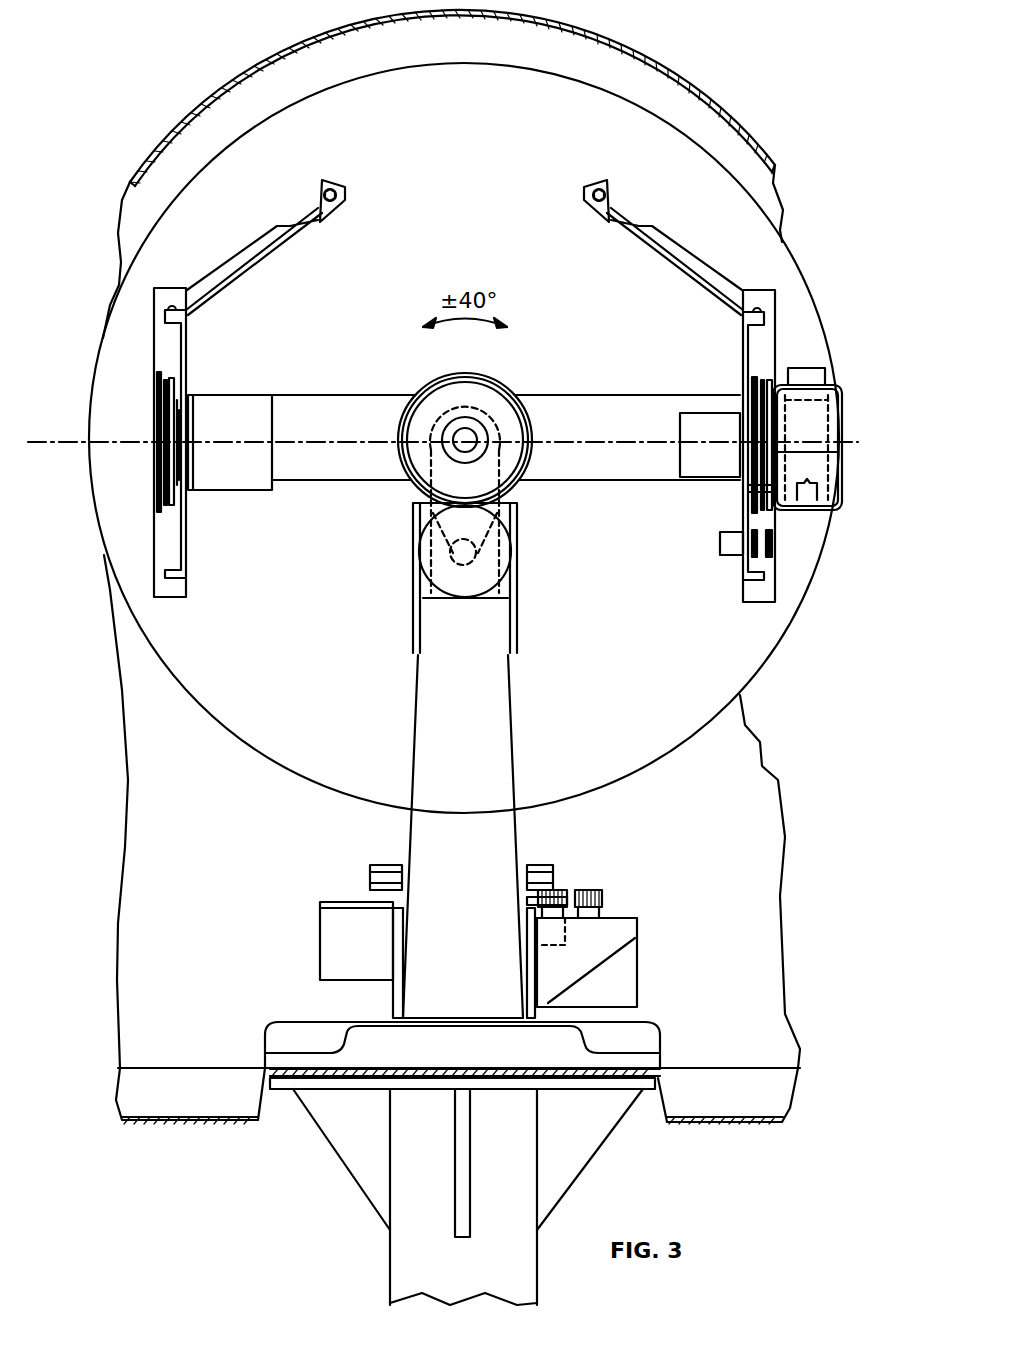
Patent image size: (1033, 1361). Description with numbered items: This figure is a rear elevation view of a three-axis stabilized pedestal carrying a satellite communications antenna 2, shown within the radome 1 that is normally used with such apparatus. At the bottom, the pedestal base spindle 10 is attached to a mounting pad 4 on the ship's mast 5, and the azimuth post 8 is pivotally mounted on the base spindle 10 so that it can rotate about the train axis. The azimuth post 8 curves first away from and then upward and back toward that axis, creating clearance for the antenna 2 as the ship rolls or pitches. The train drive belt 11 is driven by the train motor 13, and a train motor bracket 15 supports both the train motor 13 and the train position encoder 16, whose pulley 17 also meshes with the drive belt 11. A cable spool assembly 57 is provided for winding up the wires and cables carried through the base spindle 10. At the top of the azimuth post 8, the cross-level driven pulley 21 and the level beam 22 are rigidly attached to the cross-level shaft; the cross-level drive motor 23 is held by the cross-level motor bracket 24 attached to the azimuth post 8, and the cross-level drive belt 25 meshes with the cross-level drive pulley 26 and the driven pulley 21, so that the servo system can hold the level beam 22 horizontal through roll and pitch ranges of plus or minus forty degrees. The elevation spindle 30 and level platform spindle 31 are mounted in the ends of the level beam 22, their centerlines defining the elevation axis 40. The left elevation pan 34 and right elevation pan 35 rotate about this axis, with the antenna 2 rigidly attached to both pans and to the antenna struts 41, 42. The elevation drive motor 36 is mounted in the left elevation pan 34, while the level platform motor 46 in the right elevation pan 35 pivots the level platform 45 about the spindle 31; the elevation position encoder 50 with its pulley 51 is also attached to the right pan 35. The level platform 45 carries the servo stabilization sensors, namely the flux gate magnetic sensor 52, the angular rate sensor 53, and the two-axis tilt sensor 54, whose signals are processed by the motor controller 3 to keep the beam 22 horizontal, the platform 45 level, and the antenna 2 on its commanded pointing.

The radome 1 is at (724, 98).
The satellite communications antenna 2 is at (408, 155).
The motor controller 3 is at (320, 928).
The mounting pad 4 is at (348, 1090).
The ship's mast 5 is at (392, 1263).
The azimuth post 8 is at (432, 742).
The pedestal base spindle 10 is at (660, 1040).
The train drive belt 11 is at (612, 890).
The train motor 13 is at (628, 990).
The train motor bracket 15 is at (637, 930).
The train position encoder 16 is at (565, 945).
The pulley 17 is at (553, 892).
The cross-level driven pulley 21 is at (440, 383).
The level beam 22 is at (362, 395).
The cross-level drive motor 23 is at (460, 597).
The cross-level motor bracket 24 is at (428, 625).
The cross-level drive belt 25 is at (420, 492).
The cross-level drive pulley 26 is at (455, 557).
The elevation spindle 30 is at (165, 440).
The level platform spindle 31 is at (808, 450).
The left elevation pan 34 is at (182, 545).
The right elevation pan 35 is at (752, 332).
The elevation drive motor 36 is at (248, 400).
The elevation axis 40 is at (58, 442).
The antenna strut 41 is at (250, 247).
The antenna strut 42 is at (690, 255).
The level platform 45 is at (840, 497).
The level platform motor 46 is at (680, 418).
The elevation position encoder 50 is at (722, 550).
The pulley 51 is at (770, 540).
The flux gate magnetic sensor 52 is at (812, 368).
The angular rate sensor 53 is at (812, 405).
The two-axis tilt sensor 54 is at (777, 490).
The cable spool assembly 57 is at (369, 878).